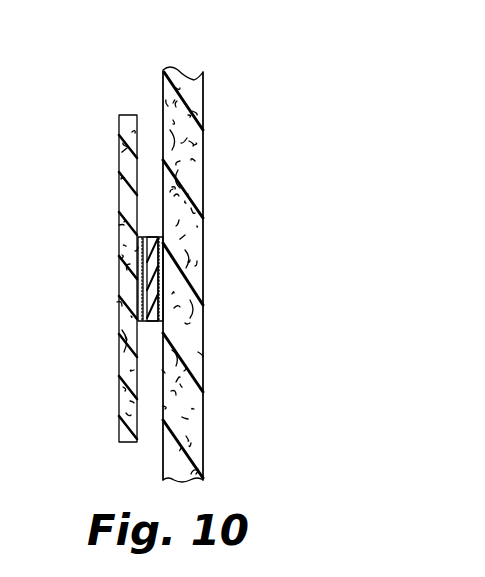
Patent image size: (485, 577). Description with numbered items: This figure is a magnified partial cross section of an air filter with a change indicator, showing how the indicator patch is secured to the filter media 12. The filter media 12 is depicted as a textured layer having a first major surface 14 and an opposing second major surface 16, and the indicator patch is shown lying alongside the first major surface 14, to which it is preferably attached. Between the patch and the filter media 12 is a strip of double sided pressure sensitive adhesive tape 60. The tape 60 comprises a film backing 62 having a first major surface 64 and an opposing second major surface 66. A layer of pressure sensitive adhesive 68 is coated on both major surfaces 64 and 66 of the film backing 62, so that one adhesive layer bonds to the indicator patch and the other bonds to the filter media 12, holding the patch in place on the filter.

The filter media 12 is at (197, 185).
The first major surface 14 is at (163, 445).
The second major surface 16 is at (204, 358).
The double sided pressure sensitive adhesive tape 60 is at (150, 206).
The film backing 62 is at (127, 341).
The first major surface 64 is at (150, 290).
The second major surface 66 is at (160, 289).
The pressure sensitive adhesive 68 is at (138, 267).